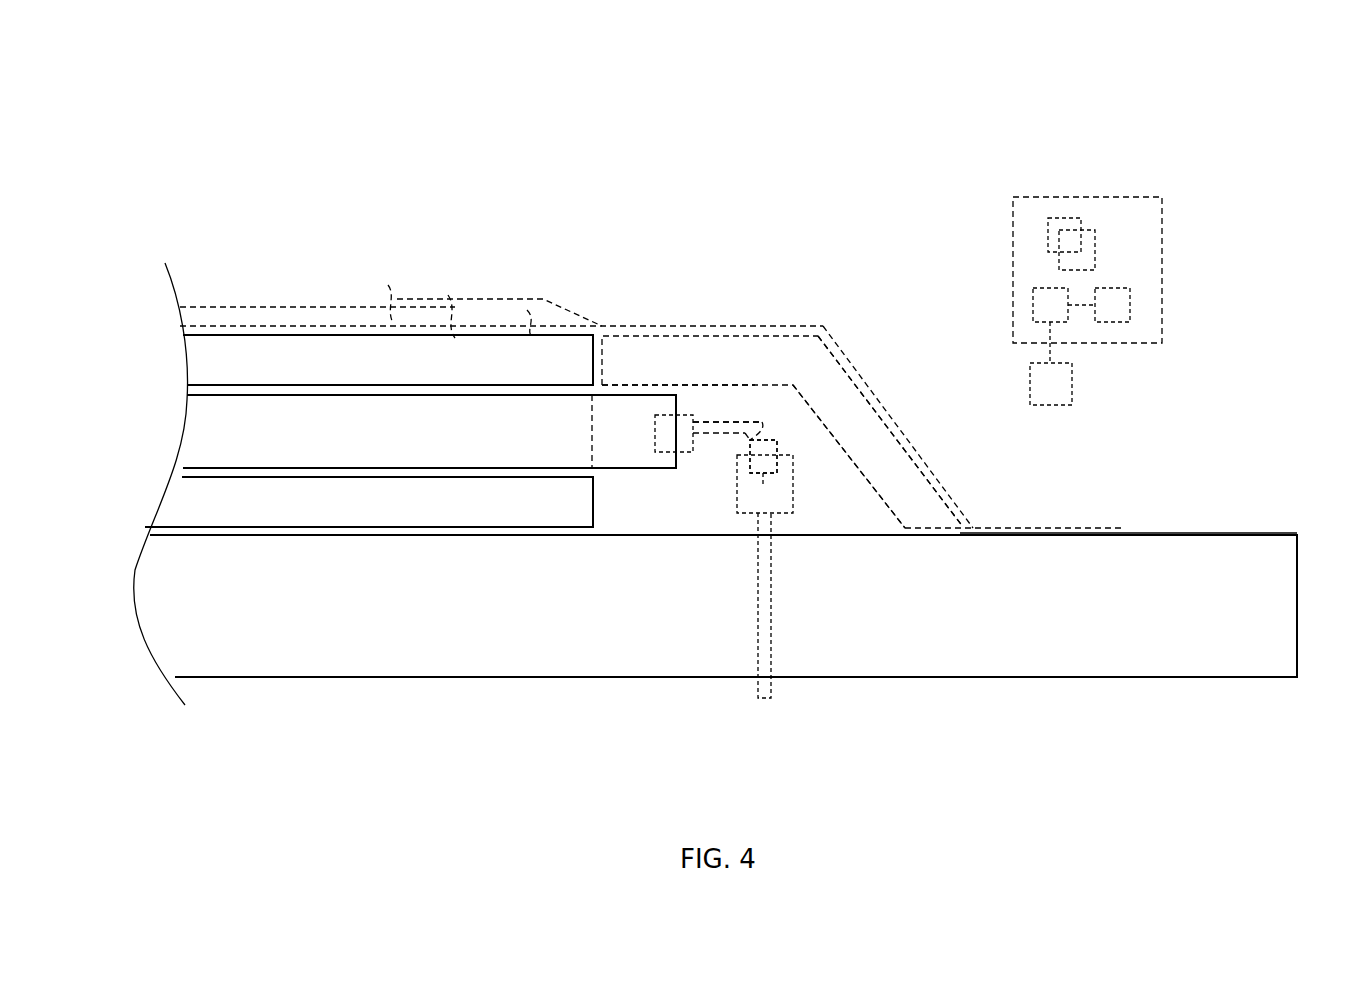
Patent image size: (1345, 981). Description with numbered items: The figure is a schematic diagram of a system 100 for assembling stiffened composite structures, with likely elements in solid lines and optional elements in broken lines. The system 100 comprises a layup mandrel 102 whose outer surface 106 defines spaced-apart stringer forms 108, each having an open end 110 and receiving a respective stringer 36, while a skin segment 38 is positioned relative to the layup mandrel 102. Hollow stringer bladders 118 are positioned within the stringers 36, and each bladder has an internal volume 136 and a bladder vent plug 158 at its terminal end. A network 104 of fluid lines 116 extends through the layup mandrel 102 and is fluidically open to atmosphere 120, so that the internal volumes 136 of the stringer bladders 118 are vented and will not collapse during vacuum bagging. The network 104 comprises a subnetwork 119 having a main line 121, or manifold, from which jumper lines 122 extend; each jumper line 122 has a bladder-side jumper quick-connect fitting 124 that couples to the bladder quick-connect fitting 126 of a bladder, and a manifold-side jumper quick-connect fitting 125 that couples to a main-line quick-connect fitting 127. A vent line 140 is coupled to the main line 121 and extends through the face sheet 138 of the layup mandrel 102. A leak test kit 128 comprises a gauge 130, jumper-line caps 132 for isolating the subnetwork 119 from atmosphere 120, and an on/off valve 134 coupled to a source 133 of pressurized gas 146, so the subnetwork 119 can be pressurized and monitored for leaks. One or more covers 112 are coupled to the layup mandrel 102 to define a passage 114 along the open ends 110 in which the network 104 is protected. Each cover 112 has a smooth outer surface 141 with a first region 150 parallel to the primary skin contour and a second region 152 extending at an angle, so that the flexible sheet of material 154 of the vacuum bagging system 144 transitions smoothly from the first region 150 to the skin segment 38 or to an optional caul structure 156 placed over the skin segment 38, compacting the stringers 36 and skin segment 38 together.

The system for assembling stiffened composite structures 100 is at (1103, 133).
The layup mandrel 102 is at (1243, 532).
The network of fluid lines 104 is at (752, 400).
The outer surface of the layup mandrel 106 is at (200, 527).
The stringer form 108 is at (482, 385).
The open end of the stringer form 110 is at (613, 492).
The cover 112 is at (857, 373).
The passage 114 is at (872, 524).
The fluid line 116 is at (762, 413).
The stringer bladder 118 is at (327, 468).
The subnetwork of fluid lines 119 is at (783, 423).
The atmosphere 120 is at (1030, 490).
The main line 121 is at (793, 473).
The jumper line 122 is at (717, 440).
The bladder-side jumper quick-connect fitting 124 is at (683, 408).
The manifold-side jumper quick-connect fitting 125 is at (782, 435).
The bladder quick-connect fitting 126 is at (655, 437).
The main-line quick-connect fitting 127 is at (762, 476).
The leak test kit 128 is at (1125, 197).
The gauge 130 is at (1130, 305).
The jumper-line cap 132 is at (1062, 218).
The source of pressurized gas 133 is at (1072, 386).
The on/off valve 134 is at (1033, 305).
The internal volume of the stringer bladder 136 is at (223, 422).
The face sheet 138 is at (1180, 535).
The vent line 140 is at (771, 612).
The smooth outer surface of the cover 141 is at (778, 335).
The vacuum bagging system 144 is at (870, 312).
The pressurized gas 146 is at (1051, 384).
The first region 150 is at (665, 325).
The second region 152 is at (907, 433).
The flexible sheet of material 154 is at (730, 325).
The caul structure 156 is at (232, 307).
The bladder vent plug 158 is at (640, 470).
The stringer 36 is at (401, 514).
The skin segment 38 is at (330, 335).